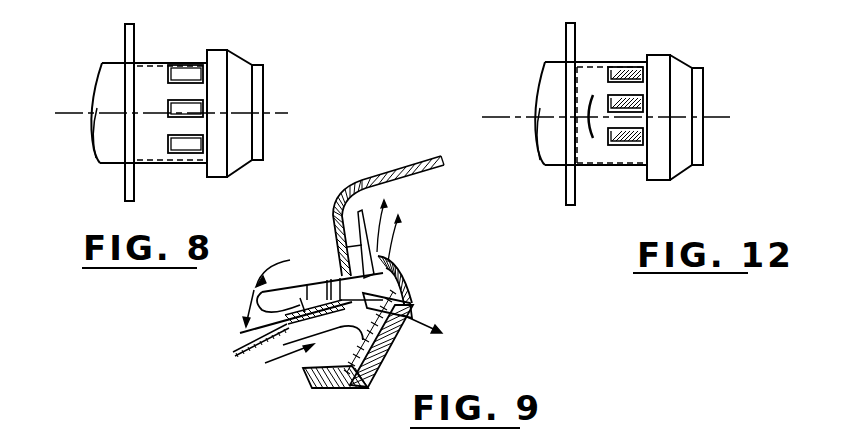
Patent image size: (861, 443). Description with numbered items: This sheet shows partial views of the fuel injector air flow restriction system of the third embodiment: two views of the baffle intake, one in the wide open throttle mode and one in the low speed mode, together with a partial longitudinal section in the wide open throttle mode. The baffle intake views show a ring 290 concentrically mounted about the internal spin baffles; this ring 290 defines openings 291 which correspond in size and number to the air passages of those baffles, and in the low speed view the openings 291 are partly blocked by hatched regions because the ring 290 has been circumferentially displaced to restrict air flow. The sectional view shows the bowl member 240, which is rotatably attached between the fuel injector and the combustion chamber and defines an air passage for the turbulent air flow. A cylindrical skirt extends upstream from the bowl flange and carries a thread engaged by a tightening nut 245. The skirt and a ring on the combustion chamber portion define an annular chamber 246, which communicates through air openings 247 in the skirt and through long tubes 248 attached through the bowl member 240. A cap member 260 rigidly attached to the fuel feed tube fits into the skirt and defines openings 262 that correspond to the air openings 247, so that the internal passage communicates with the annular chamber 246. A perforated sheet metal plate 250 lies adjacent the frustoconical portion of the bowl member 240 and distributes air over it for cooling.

In FIG. 9, the bowl member 240 is at (385, 355).
In FIG. 9, the tightening nut 245 is at (300, 293).
In FIG. 9, the annular chamber 246 is at (340, 256).
In FIG. 9, the air openings 247 is at (283, 318).
In FIG. 9, the long tubes 248 is at (412, 305).
In FIG. 9, the perforated sheet metal plate 250 is at (350, 380).
In FIG. 9, the cap member 260 is at (233, 351).
In FIG. 9, the openings 262 is at (335, 322).
In FIG. 8, the ring 290 is at (150, 138).
In FIG. 12, the ring 290 is at (592, 82).
In FIG. 8, the openings 291 is at (188, 75).